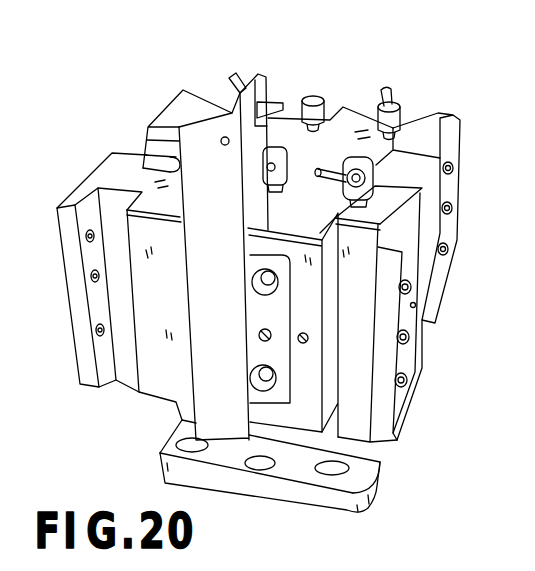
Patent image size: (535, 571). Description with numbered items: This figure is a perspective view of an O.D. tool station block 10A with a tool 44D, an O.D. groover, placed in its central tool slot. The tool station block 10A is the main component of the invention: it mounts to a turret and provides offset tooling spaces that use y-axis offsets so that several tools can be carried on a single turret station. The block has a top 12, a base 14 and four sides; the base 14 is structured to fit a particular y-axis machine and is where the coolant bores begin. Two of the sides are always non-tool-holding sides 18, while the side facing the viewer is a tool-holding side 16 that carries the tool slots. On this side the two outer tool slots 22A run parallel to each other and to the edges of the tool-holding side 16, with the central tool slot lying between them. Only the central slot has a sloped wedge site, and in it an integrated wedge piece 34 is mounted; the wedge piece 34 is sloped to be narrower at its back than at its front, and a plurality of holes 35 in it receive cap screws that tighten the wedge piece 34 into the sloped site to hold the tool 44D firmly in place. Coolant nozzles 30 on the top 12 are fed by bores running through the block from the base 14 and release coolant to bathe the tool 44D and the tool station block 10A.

The tool station block 10A is at (338, 52).
The top 12 is at (362, 111).
The base 14 is at (340, 510).
The tool-holding side 16 is at (161, 408).
The non-tool-holding side 18 is at (445, 272).
The tool slot 22A is at (125, 385).
The coolant nozzle 30 is at (396, 101).
The wedge piece 34 is at (262, 310).
The holes 35 is at (252, 362).
The tool 44D is at (217, 108).